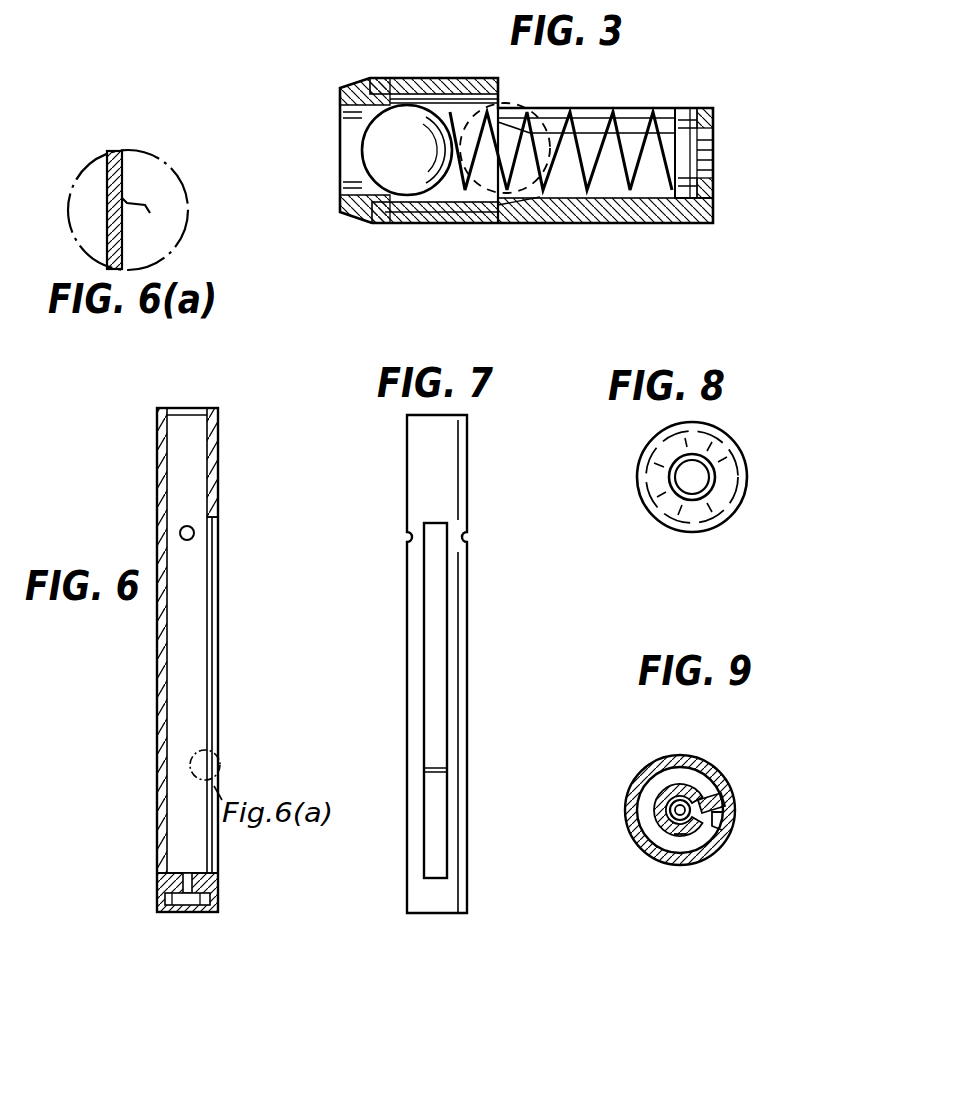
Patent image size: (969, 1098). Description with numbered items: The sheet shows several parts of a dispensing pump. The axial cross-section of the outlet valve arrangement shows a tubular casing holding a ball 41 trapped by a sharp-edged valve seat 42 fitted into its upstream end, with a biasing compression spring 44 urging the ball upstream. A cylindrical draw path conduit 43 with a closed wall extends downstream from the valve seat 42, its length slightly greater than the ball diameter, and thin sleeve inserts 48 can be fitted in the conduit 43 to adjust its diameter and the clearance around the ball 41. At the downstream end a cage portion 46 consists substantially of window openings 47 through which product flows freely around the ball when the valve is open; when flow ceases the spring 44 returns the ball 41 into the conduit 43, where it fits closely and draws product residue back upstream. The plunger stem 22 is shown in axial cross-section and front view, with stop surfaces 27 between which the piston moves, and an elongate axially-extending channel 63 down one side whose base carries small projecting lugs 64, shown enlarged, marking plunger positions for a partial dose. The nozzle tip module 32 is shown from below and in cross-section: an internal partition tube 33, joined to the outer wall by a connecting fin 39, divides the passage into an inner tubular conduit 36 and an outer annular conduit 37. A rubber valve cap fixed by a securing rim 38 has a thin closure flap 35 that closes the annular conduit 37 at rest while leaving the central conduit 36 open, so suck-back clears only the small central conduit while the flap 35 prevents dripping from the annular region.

In FIG. 6, the plunger stem 22 is at (157, 488).
In FIG. 6, the stop surface 27 is at (157, 912).
In FIG. 9, the nozzle tip module 32 is at (642, 780).
In FIG. 9, the partition tube 33 is at (685, 834).
In FIG. 8, the closure flap 35 is at (733, 477).
In FIG. 8, the inner tubular conduit 36 is at (690, 477).
In FIG. 9, the inner tubular conduit 36 is at (680, 806).
In FIG. 9, the outer annular conduit 37 is at (655, 822).
In FIG. 8, the securing rim 38 is at (731, 446).
In FIG. 9, the connecting fin 39 is at (716, 792).
In FIG. 3, the ball 41 is at (382, 158).
In FIG. 3, the valve seat 42 is at (372, 85).
In FIG. 3, the draw path conduit 43 is at (498, 72).
In FIG. 3, the compression spring 44 is at (630, 150).
In FIG. 3, the cage portion 46 is at (551, 108).
In FIG. 3, the window openings 47 is at (607, 177).
In FIG. 3, the sleeve insert 48 is at (462, 214).
In FIG. 7, the channel 63 is at (432, 563).
In FIG. 6a, the lug 64 is at (145, 223).
In FIG. 6, the lug 64 is at (208, 772).
In FIG. 7, the lug 64 is at (430, 771).